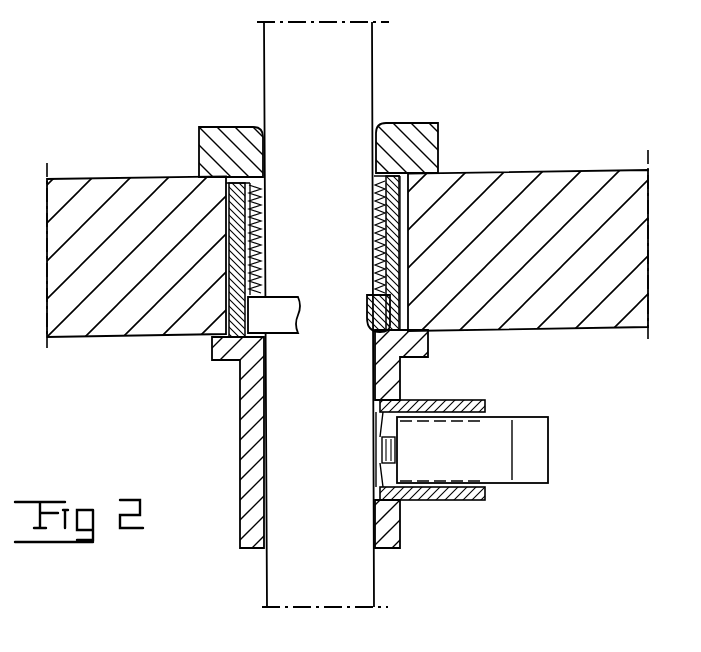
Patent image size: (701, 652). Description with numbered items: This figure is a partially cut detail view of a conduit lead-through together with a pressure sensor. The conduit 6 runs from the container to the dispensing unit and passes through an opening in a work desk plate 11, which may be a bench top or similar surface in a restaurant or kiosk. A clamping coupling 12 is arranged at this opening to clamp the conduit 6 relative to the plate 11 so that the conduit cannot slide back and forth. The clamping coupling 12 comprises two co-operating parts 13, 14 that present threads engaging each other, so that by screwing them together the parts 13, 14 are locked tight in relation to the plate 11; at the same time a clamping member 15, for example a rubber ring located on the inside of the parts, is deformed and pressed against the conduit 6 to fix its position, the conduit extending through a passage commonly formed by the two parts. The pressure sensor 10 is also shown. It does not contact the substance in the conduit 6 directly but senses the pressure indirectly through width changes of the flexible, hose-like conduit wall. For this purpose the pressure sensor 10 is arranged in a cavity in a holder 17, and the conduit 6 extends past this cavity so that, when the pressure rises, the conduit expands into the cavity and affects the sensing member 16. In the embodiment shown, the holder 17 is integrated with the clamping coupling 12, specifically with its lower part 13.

The conduit 6 is at (277, 78).
The pressure sensor 10 is at (490, 458).
The work desk plate 11 is at (545, 185).
The clamping coupling 12 is at (408, 123).
The lower part 13 is at (250, 432).
The part 14 is at (218, 144).
The clamping member 15 is at (370, 300).
The sensing member 16 is at (382, 470).
The holder 17 is at (450, 395).